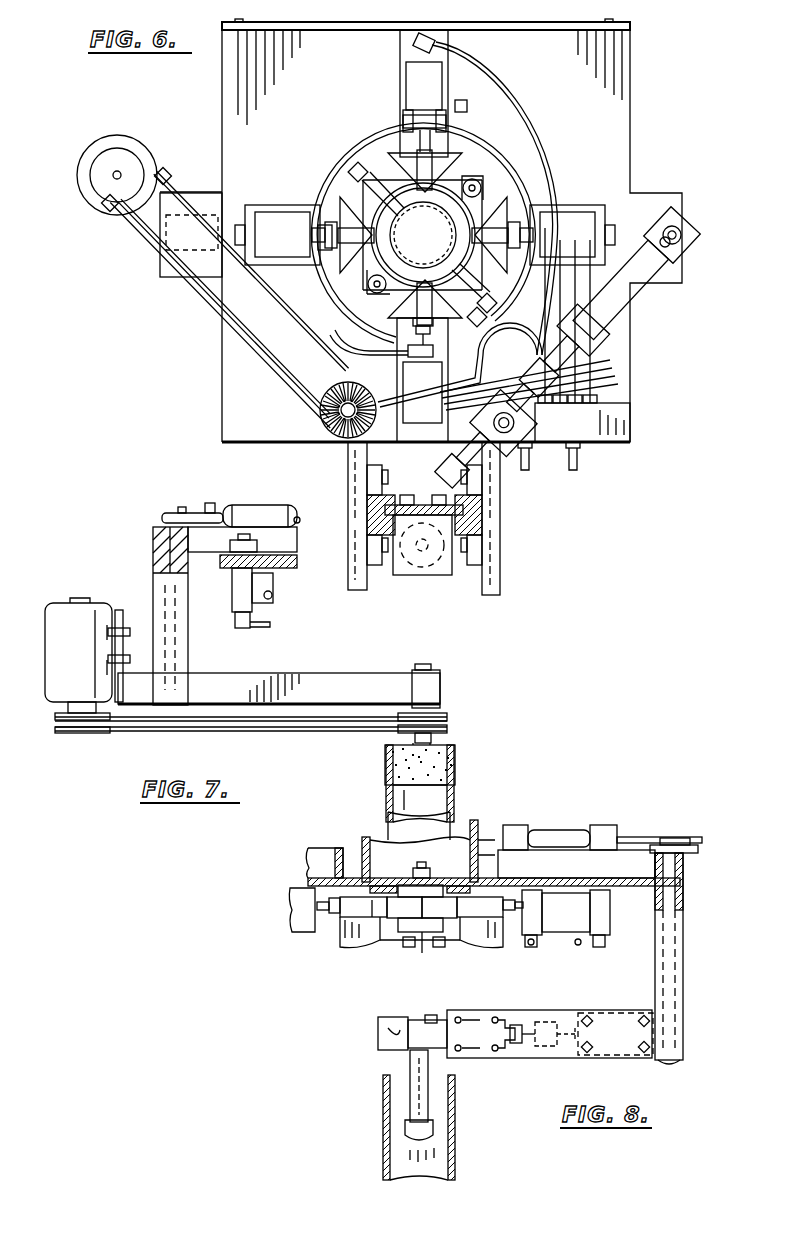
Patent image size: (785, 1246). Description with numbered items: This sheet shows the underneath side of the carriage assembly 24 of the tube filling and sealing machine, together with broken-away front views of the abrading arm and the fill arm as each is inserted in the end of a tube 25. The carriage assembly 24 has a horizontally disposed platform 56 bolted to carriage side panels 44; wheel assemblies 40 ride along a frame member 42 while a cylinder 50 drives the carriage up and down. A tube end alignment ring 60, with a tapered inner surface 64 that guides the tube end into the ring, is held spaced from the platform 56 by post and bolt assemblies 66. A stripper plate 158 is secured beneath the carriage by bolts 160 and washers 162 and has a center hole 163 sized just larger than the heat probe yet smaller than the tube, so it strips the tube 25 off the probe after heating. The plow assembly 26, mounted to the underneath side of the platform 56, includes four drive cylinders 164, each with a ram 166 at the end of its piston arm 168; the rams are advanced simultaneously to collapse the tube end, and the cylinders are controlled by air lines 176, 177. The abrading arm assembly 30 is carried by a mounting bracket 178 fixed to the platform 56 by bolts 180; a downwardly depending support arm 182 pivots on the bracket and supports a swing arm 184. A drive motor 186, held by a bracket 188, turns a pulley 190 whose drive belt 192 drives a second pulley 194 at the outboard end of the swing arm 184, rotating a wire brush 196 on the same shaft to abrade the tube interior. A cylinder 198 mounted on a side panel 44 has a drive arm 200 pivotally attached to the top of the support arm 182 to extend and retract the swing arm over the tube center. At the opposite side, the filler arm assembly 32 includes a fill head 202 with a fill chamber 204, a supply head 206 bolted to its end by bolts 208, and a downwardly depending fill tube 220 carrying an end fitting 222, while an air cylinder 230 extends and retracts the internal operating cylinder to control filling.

In FIG. 6, the carriage assembly 24 is at (644, 95).
In FIG. 6, the tube 25 is at (423, 235).
In FIG. 7, the tube 25 is at (385, 798).
In FIG. 8, the tube 25 is at (388, 805).
In FIG. 6, the plow assembly 26 is at (305, 150).
In FIG. 6, the abrading arm assembly 30 is at (140, 245).
In FIG. 7, the abrading arm assembly 30 is at (128, 752).
In FIG. 6, the filler arm assembly 32 is at (640, 300).
In FIG. 8, the filler arm assembly 32 is at (695, 950).
In FIG. 6, the wheel assemblies 40 is at (367, 480).
In FIG. 6, the frame member 42 is at (480, 520).
In FIG. 6, the carriage side panels 44 is at (355, 590).
In FIG. 8, the carriage side panels 44 is at (364, 852).
In FIG. 6, the cylinder 50 is at (418, 578).
In FIG. 6, the horizontal platform 56 is at (622, 134).
In FIG. 7, the horizontal platform 56 is at (290, 563).
In FIG. 8, the horizontal platform 56 is at (308, 882).
In FIG. 6, the tube end alignment ring 60 is at (370, 192).
In FIG. 6, the tapered inner surface 64 is at (392, 175).
In FIG. 6, the post and bolt assemblies 66 is at (354, 168).
In FIG. 6, the stripper plate 158 is at (470, 180).
In FIG. 8, the stripper plate 158 is at (372, 950).
In FIG. 6, the bolts 160 is at (482, 188).
In FIG. 6, the washers 162 is at (483, 200).
In FIG. 8, the center hole 163 is at (455, 858).
In FIG. 6, the drive cylinders 164 is at (400, 75).
In FIG. 7, the drive cylinders 164 is at (273, 600).
In FIG. 8, the drive cylinders 164 is at (292, 908).
In FIG. 6, the ram 166 is at (320, 212).
In FIG. 8, the ram 166 is at (345, 950).
In FIG. 6, the piston arm 168 is at (436, 346).
In FIG. 8, the piston arm 168 is at (322, 913).
In FIG. 6, the air line 176 is at (610, 372).
In FIG. 8, the air line 176 is at (582, 946).
In FIG. 6, the air line 177 is at (549, 465).
In FIG. 8, the air line 177 is at (530, 948).
In FIG. 7, the mounting bracket 178 is at (215, 552).
In FIG. 7, the bolts 180 is at (257, 543).
In FIG. 6, the support arm 182 is at (145, 278).
In FIG. 7, the support arm 182 is at (188, 636).
In FIG. 6, the swing arm 184 is at (176, 298).
In FIG. 7, the swing arm 184 is at (338, 670).
In FIG. 6, the drive motor 186 is at (82, 192).
In FIG. 7, the drive motor 186 is at (62, 605).
In FIG. 6, the bracket 188 is at (168, 170).
In FIG. 7, the bracket 188 is at (120, 610).
In FIG. 6, the pulley 190 is at (118, 150).
In FIG. 7, the pulley 190 is at (68, 730).
In FIG. 6, the drive belt 192 is at (200, 328).
In FIG. 7, the drive belt 192 is at (228, 728).
In FIG. 7, the second pulley 194 is at (448, 718).
In FIG. 6, the wire brush 196 is at (335, 442).
In FIG. 7, the wire brush 196 is at (385, 764).
In FIG. 7, the cylinder 198 is at (278, 504).
In FIG. 7, the drive arm 200 is at (228, 507).
In FIG. 6, the fill head 202 is at (600, 355).
In FIG. 8, the fill head 202 is at (518, 1060).
In FIG. 8, the fill chamber 204 is at (435, 1020).
In FIG. 8, the supply head 206 is at (430, 1015).
In FIG. 8, the bolts 208 is at (378, 1045).
In FIG. 8, the fill tube 220 is at (410, 1060).
In FIG. 8, the end fitting 222 is at (405, 1128).
In FIG. 6, the air cylinder 230 is at (675, 270).
In FIG. 8, the air cylinder 230 is at (605, 1062).